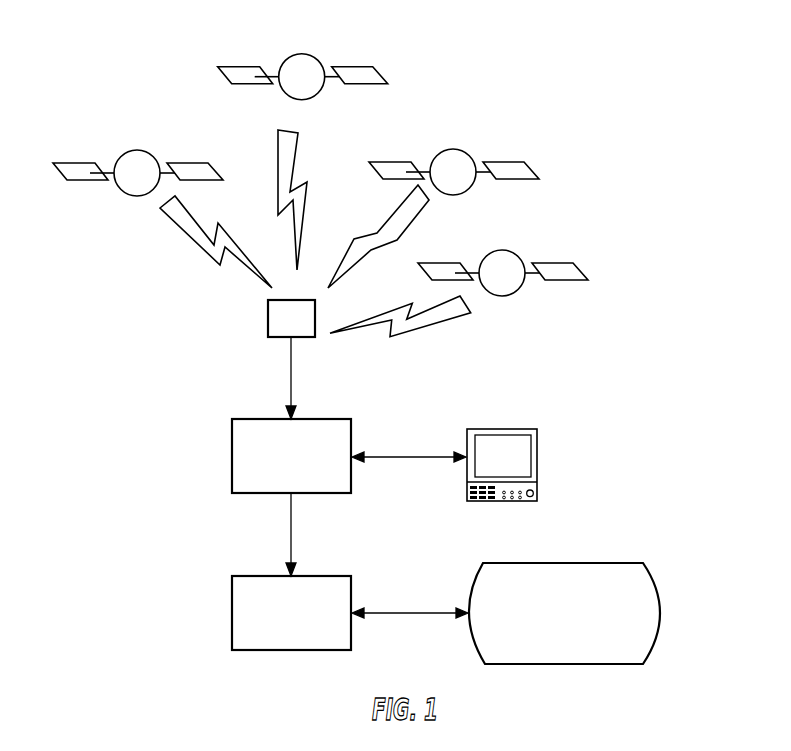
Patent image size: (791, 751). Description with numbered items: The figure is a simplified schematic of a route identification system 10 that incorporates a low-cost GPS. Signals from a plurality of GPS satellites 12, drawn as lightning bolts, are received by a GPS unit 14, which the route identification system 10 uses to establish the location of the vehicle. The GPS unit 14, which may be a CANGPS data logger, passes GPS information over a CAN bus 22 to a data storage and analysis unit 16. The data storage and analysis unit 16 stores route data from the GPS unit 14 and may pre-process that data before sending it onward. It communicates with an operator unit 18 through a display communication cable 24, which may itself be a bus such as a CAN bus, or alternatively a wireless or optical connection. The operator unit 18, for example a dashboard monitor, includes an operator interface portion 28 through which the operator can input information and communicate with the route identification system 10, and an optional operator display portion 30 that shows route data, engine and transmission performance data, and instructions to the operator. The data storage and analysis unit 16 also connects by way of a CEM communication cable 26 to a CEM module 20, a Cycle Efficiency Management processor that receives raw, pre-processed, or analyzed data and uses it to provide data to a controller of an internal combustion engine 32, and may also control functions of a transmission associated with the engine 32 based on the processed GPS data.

The route identification system 10 is at (572, 161).
The GPS satellites 12 is at (297, 54).
The GPS unit 14 is at (268, 311).
The data storage and analysis unit 16 is at (256, 419).
The operator unit 18 is at (513, 447).
The CEM module 20 is at (258, 576).
The CAN bus 22 is at (290, 348).
The display communication cable 24 is at (417, 456).
The CEM communication cable 26 is at (290, 518).
The operator interface portion 28 is at (537, 493).
The operator display portion 30 is at (534, 450).
The internal combustion engine 32 is at (627, 563).